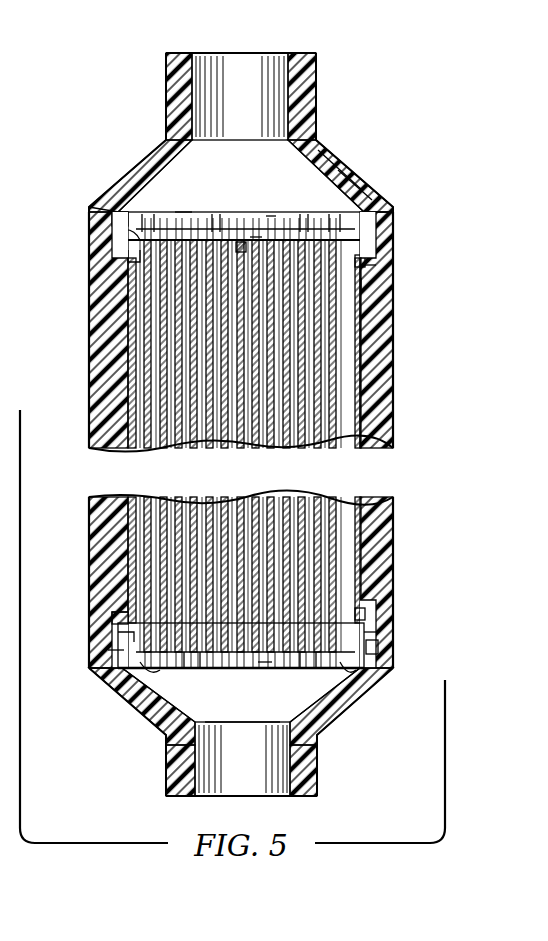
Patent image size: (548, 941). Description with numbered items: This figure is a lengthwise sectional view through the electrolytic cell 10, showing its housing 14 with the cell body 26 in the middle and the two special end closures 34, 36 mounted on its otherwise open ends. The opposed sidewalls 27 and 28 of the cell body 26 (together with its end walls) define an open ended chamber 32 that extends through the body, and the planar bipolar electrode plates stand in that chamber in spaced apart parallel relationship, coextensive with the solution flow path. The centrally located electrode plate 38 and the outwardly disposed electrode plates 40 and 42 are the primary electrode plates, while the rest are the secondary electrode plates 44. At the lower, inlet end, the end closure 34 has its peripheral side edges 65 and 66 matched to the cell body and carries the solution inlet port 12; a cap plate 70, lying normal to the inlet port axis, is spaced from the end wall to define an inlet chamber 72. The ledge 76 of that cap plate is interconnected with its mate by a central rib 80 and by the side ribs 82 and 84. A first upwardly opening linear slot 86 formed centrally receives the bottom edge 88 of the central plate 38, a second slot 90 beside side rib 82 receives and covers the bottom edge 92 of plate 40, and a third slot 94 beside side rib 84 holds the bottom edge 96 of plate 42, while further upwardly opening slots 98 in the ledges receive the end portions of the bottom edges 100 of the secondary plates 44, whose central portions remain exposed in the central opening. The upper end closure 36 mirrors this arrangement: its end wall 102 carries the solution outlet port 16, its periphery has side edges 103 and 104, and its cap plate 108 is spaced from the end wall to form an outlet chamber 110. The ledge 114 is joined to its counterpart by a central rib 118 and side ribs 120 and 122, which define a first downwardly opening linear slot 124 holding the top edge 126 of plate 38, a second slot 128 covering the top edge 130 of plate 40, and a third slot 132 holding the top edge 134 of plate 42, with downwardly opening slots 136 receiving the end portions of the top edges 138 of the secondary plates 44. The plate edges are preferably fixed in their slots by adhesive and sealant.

The electrolytic cell 10 is at (376, 112).
The solution inlet port 12 is at (316, 762).
The housing 14 is at (392, 264).
The solution outlet port 16 is at (290, 58).
The cell body 26 is at (112, 542).
The sidewall 27 is at (89, 420).
The sidewall 28 is at (393, 414).
The open ended chamber 32 is at (370, 380).
The end closure 34 is at (152, 747).
The end closure 36 is at (142, 160).
The centrally located electrode plate 38 is at (238, 500).
The outwardly disposed electrode plate 40 is at (130, 347).
The outwardly disposed electrode plate 42 is at (361, 347).
The secondary electrode plates 44 is at (150, 502).
The side edge 65 is at (96, 677).
The side edge 66 is at (393, 670).
The cap plate 70 is at (212, 680).
The inlet chamber 72 is at (243, 759).
The ledge 76 is at (152, 684).
The central rib 80 is at (238, 664).
The side rib 82 is at (125, 638).
The side rib 84 is at (380, 652).
The first upwardly opening linear slot 86 is at (264, 668).
The bottom edge 88 is at (234, 742).
The second upwardly opening linear slot 90 is at (126, 618).
The bottom edge 92 is at (112, 654).
The third upwardly opening slot 94 is at (376, 614).
The bottom edge 96 is at (376, 638).
The upwardly opening slots 98 is at (152, 674).
The bottom edges 100 is at (188, 664).
The end wall 102 is at (340, 164).
The side edge 103 is at (100, 208).
The side edge 104 is at (388, 208).
The cap plate 108 is at (183, 212).
The outlet chamber 110 is at (283, 165).
The ledge 114 is at (364, 178).
The central rib 118 is at (256, 238).
The side rib 120 is at (120, 222).
The side rib 122 is at (374, 278).
The first downwardly opening linear slot 124 is at (240, 248).
The top edge 126 is at (270, 234).
The second downwardly opening linear slot 128 is at (135, 260).
The top edge 130 is at (130, 244).
The third downwardly opening slot 132 is at (366, 284).
The top edge 134 is at (382, 272).
The downwardly opening slots 136 is at (148, 232).
The top edges 138 is at (216, 234).